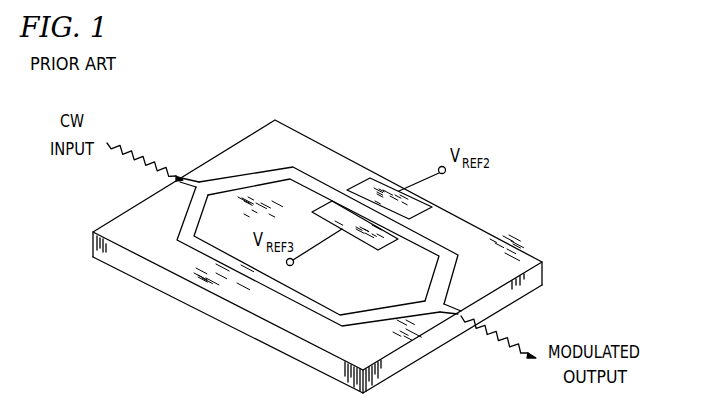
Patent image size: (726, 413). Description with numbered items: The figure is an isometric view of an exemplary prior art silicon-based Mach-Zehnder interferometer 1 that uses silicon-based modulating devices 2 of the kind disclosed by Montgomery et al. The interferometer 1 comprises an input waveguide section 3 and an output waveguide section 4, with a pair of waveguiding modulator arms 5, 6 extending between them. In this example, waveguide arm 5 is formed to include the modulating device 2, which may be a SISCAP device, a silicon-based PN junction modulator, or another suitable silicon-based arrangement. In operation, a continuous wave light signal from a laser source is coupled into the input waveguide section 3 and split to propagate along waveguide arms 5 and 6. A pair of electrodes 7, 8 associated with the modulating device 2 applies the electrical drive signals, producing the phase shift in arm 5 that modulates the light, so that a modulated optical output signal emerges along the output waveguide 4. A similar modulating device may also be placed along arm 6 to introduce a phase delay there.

The Mach-Zehnder interferometer 1 is at (528, 136).
The modulating device 2 is at (427, 202).
The input waveguide section 3 is at (187, 185).
The output waveguide section 4 is at (447, 305).
The waveguide arm 5 is at (272, 172).
The waveguide arm 6 is at (317, 305).
The electrode 7 is at (362, 186).
The electrode 8 is at (312, 209).